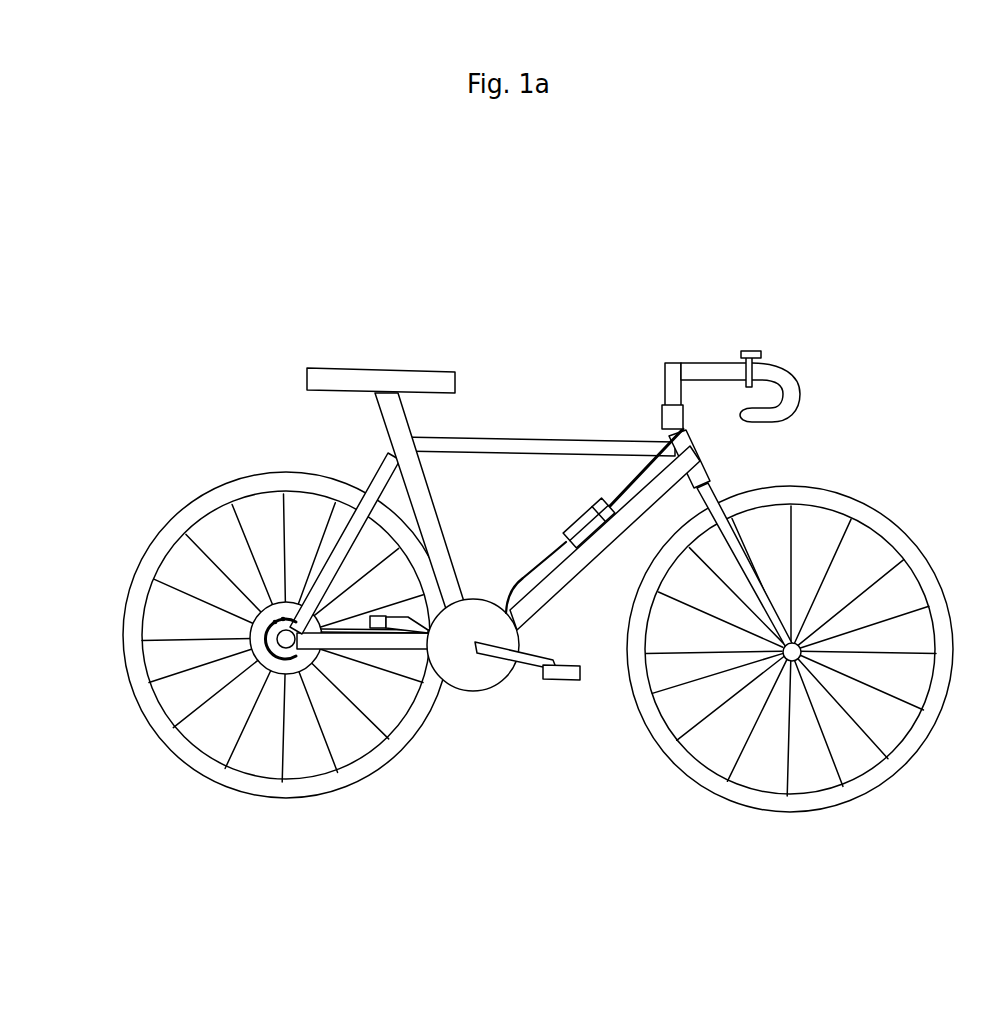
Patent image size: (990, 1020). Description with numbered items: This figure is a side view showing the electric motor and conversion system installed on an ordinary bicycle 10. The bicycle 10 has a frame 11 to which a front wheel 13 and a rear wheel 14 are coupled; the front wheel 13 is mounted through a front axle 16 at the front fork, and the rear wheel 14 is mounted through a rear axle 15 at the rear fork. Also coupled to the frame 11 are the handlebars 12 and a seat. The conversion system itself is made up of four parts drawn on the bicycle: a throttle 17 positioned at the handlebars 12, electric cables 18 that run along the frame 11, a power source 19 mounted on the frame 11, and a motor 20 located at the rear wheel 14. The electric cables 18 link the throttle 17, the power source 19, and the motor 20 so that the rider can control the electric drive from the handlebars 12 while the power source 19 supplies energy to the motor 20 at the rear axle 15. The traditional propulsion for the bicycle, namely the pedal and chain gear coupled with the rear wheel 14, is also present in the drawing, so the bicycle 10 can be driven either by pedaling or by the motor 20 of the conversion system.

The bicycle 10 is at (355, 255).
The frame 11 is at (573, 562).
The handlebars 12 is at (792, 397).
The front wheel 13 is at (880, 511).
The rear wheel 14 is at (392, 748).
The rear axle 15 is at (285, 642).
The front axle 16 is at (803, 658).
The throttle 17 is at (748, 350).
The electric cables 18 is at (648, 472).
The power source 19 is at (590, 503).
The motor 20 is at (267, 597).